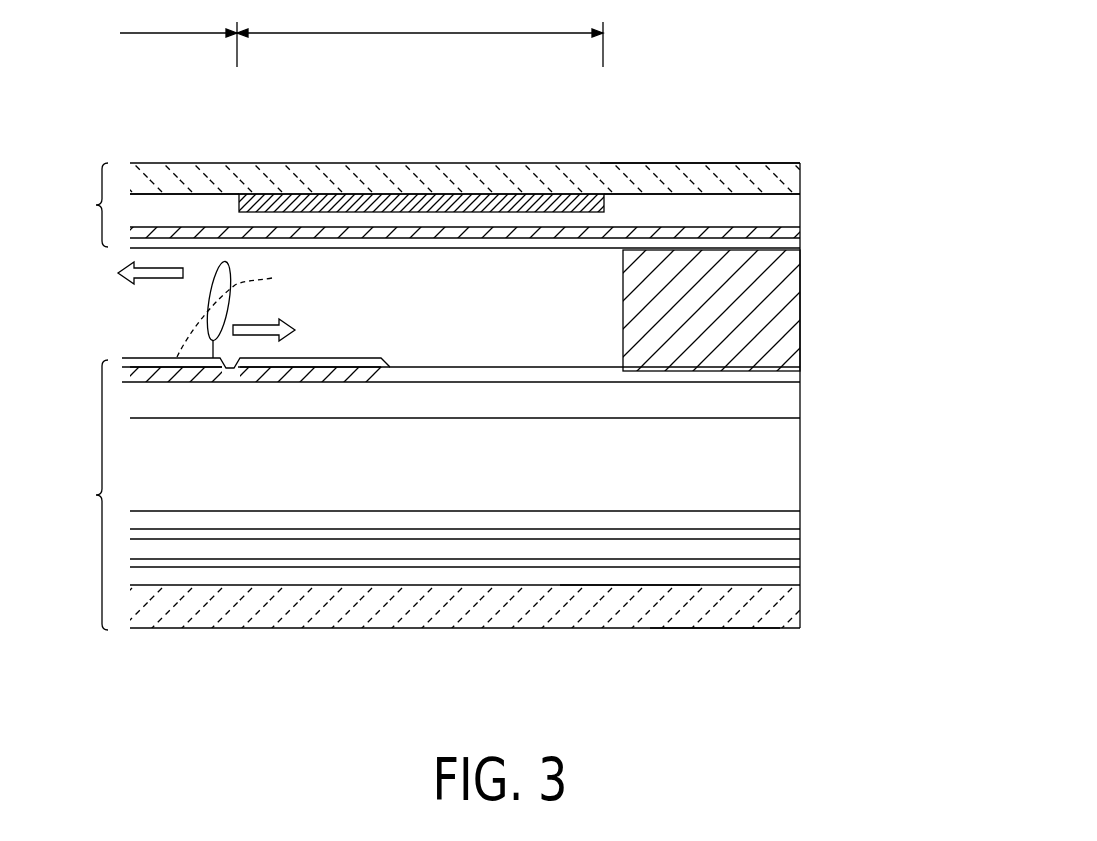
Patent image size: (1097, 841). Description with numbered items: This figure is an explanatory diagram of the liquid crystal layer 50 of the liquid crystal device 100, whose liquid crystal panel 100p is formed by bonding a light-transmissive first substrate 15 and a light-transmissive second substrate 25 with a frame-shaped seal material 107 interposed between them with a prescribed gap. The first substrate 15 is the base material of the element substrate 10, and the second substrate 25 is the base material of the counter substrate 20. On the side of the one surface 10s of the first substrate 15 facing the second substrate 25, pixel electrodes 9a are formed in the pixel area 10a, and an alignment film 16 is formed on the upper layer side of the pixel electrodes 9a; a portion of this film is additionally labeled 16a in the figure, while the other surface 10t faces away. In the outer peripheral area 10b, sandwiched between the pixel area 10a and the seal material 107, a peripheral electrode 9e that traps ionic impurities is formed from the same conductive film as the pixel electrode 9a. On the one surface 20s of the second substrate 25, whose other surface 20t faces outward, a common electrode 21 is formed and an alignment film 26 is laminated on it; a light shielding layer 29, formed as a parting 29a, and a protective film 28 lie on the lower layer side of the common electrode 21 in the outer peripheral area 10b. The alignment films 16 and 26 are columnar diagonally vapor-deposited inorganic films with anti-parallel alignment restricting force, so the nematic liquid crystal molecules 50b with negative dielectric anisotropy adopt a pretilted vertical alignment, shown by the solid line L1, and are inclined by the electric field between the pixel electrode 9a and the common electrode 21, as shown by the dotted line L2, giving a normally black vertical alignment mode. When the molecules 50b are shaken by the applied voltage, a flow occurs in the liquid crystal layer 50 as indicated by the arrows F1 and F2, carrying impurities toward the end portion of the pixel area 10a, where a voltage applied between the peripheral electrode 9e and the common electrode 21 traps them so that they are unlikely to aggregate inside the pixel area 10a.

The liquid crystal device 100 is at (498, 349).
The liquid crystal panel 100p is at (498, 349).
The element substrate 10 is at (479, 525).
The pixel area 10a is at (178, 36).
The outer peripheral area 10b is at (420, 36).
The one surface of the first substrate 10s is at (632, 585).
The other surface of the first substrate 10t is at (705, 628).
The first substrate 15 is at (790, 605).
The alignment film 16 is at (152, 362).
The pixel electrode portion 16a is at (258, 367).
The pixel electrode 9a is at (150, 367).
The peripheral electrode 9e is at (318, 367).
The counter substrate 20 is at (479, 164).
The one surface of the second substrate 20s is at (648, 193).
The other surface of the second substrate 20t is at (716, 163).
The common electrode 21 is at (267, 234).
The second substrate 25 is at (787, 176).
The alignment film 26 is at (153, 246).
The protective film 28 is at (215, 210).
The light shielding layer 29 is at (421, 146).
The parting 29a is at (444, 203).
The liquid crystal layer 50 is at (459, 321).
The liquid crystal molecules 50b is at (180, 380).
The seal material 107 is at (790, 320).
The solid line L1 is at (212, 278).
The dotted line L2 is at (244, 313).
The arrow F1 is at (279, 331).
The arrow F2 is at (134, 275).